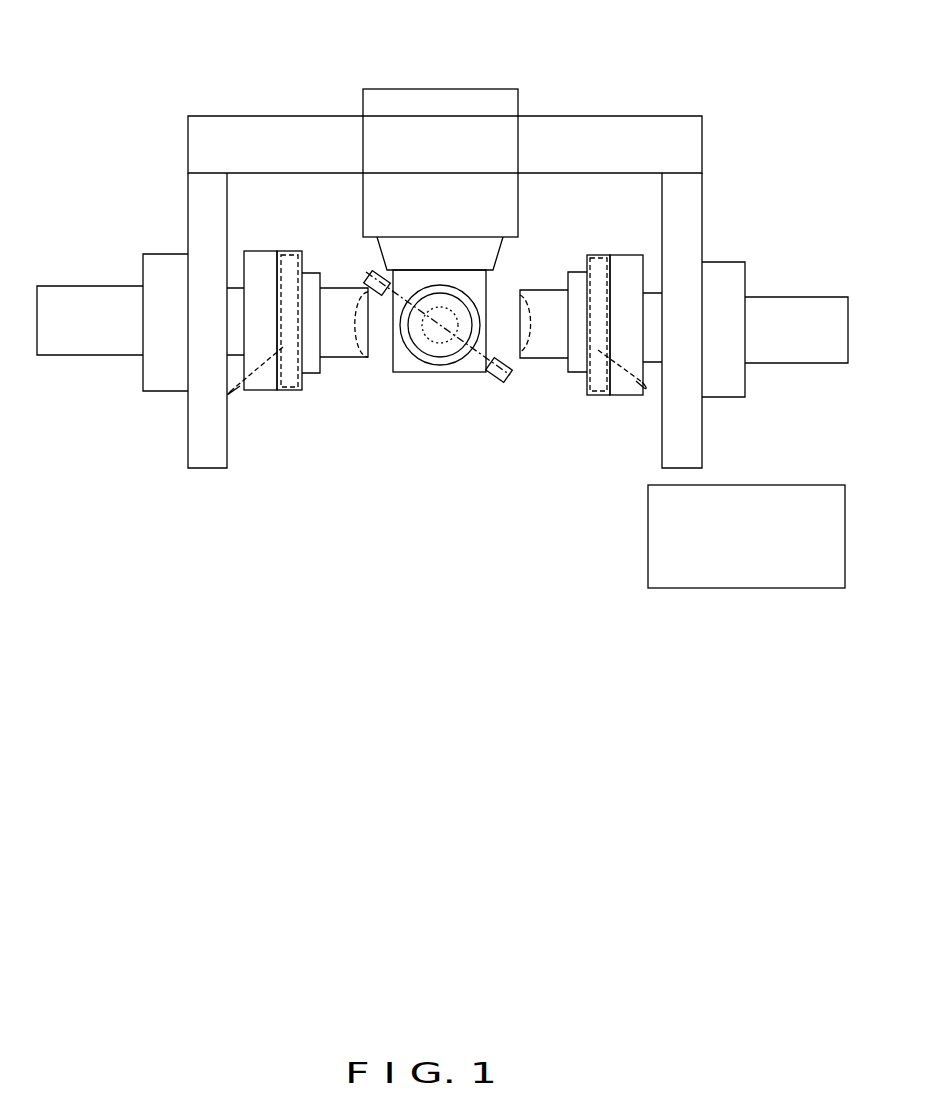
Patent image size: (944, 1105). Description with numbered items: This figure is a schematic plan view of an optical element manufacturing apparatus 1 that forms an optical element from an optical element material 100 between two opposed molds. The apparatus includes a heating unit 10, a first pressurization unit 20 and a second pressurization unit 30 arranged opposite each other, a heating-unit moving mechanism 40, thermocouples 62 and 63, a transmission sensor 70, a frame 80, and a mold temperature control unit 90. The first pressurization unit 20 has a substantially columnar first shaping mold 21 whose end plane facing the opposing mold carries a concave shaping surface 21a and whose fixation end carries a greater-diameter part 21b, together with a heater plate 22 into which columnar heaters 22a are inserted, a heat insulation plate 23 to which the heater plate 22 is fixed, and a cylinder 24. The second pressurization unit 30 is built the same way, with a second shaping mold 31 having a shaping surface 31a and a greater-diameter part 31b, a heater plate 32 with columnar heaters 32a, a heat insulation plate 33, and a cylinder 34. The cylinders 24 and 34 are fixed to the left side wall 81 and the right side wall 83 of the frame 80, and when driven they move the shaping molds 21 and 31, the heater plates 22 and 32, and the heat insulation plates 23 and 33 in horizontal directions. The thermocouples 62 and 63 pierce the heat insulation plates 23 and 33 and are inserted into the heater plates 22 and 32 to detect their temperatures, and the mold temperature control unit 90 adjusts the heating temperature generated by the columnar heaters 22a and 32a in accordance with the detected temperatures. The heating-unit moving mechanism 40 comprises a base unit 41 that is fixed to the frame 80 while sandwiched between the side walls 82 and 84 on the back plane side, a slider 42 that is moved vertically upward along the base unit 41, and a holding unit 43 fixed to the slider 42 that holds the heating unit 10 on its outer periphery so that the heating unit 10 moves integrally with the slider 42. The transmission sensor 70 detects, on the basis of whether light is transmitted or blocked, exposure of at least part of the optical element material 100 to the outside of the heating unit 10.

The optical element manufacturing apparatus 1 is at (442, 294).
The heating unit 10 is at (438, 385).
The optical element material 100 is at (444, 387).
The first pressurization unit 20 is at (217, 344).
The first shaping mold 21 is at (359, 293).
The shaping surface 21a is at (358, 322).
The greater-diameter part 21b is at (298, 274).
The heater plate 22 is at (279, 342).
The columnar heater 22a is at (268, 294).
The heat insulation plate 23 is at (267, 381).
The cylinder 24 is at (112, 348).
The second pressurization unit 30 is at (676, 334).
The second shaping mold 31 is at (544, 267).
The shaping surface 31a is at (523, 303).
The greater-diameter part 31b is at (565, 371).
The heater plate 32 is at (610, 339).
The columnar heater 32a is at (611, 375).
The heat insulation plate 33 is at (630, 290).
The cylinder 34 is at (775, 357).
The heating-unit moving mechanism 40 is at (462, 135).
The base unit 41 is at (440, 118).
The slider 42 is at (469, 243).
The holding unit 43 is at (452, 389).
The thermocouple 62 is at (255, 399).
The thermocouple 63 is at (622, 403).
The transmission sensor 70 is at (497, 378).
The frame 80 is at (440, 294).
The left side wall 81 is at (198, 359).
The side wall 82 is at (275, 144).
The right side wall 83 is at (719, 309).
The side wall 84 is at (573, 109).
The mold temperature control unit 90 is at (703, 536).